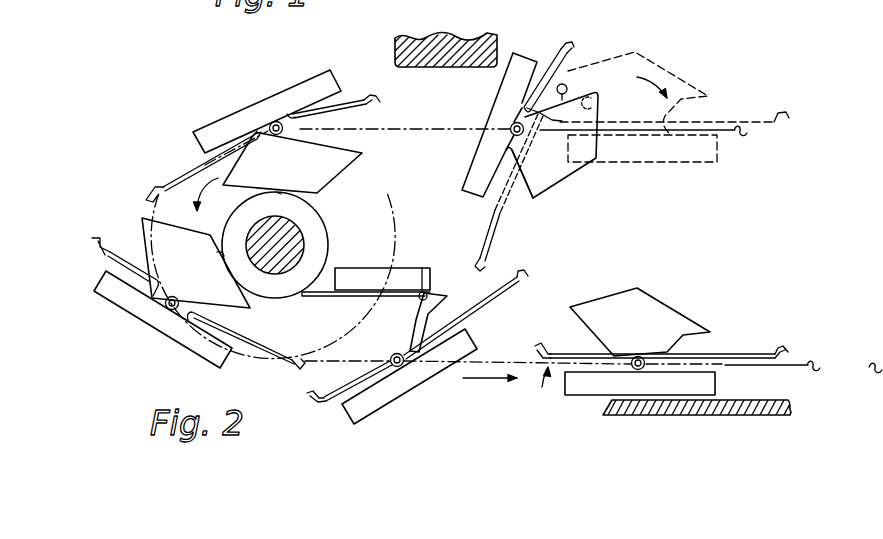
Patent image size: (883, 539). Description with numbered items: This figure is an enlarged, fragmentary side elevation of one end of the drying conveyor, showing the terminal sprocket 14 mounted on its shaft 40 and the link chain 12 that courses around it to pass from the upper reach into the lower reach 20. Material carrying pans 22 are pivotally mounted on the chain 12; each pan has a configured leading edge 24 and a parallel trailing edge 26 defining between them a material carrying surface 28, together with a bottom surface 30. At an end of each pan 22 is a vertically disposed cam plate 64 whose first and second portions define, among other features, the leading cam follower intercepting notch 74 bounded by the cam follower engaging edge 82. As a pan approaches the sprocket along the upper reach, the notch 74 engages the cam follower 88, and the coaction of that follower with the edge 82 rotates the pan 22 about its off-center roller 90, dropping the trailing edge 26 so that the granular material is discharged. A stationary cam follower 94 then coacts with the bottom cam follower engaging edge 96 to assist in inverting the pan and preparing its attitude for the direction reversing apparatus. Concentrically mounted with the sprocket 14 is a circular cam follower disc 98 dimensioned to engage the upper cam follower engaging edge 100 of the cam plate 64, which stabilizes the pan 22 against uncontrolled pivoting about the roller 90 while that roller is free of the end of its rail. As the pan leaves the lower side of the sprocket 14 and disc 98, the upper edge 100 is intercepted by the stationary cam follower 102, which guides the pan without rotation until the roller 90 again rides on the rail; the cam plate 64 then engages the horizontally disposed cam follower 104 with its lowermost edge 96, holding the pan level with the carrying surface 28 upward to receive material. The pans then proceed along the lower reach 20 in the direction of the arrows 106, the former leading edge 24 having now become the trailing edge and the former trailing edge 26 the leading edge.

The link chain 12 is at (452, 127).
The terminal sprocket 14 is at (392, 216).
The lower reach 20 is at (550, 390).
The material carrying pan 22 is at (187, 170).
The leading edge 24 is at (376, 102).
The trailing edge 26 is at (148, 193).
The material carrying surface 28 is at (708, 118).
The bottom surface 30 is at (756, 130).
The shaft 40 is at (302, 232).
The cam plate 64 is at (341, 181).
The cam follower intercepting notch 74 is at (600, 105).
The cam follower engaging edge 82 is at (594, 97).
The cam follower 88 is at (574, 70).
The off-center roller 90 is at (273, 116).
The stationary cam follower 94 is at (497, 40).
The bottom cam follower engaging edge 96 is at (572, 48).
The circular cam follower 98 is at (330, 243).
The upper cam follower engaging edge 100 is at (276, 192).
The stationary cam follower 102 is at (326, 297).
The horizontally disposed cam follower 104 is at (632, 411).
The arrows 106 is at (488, 380).